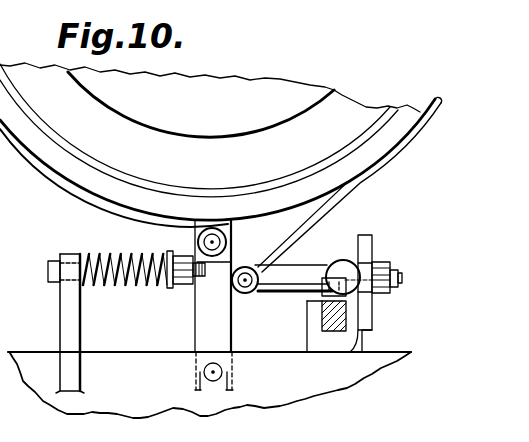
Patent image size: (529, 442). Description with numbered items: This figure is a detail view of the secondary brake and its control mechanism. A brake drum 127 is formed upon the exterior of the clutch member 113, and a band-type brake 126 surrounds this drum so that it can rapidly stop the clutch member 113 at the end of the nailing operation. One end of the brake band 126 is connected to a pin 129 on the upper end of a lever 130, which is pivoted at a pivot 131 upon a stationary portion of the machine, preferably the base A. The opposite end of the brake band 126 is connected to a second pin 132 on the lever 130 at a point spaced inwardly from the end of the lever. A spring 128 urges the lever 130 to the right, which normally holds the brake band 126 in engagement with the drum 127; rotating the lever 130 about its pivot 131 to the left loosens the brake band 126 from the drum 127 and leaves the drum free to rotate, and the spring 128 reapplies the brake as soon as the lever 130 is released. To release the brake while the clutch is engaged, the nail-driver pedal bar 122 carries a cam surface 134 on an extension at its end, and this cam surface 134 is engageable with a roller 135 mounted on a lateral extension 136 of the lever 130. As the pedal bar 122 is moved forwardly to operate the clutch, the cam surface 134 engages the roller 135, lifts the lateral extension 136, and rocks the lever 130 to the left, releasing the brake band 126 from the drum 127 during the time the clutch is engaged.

The clutch member 113 is at (352, 108).
The nail-driver pedal bar 122 is at (345, 318).
The brake 126 is at (337, 193).
The brake drum 127 is at (376, 143).
The spring 128 is at (142, 279).
The pin 129 is at (216, 241).
The lever 130 is at (220, 331).
The pivot 131 is at (222, 370).
The pin 132 is at (247, 284).
The cam surface 134 is at (334, 263).
The roller 135 is at (364, 259).
The lateral extension 136 is at (400, 274).
The base A is at (140, 396).